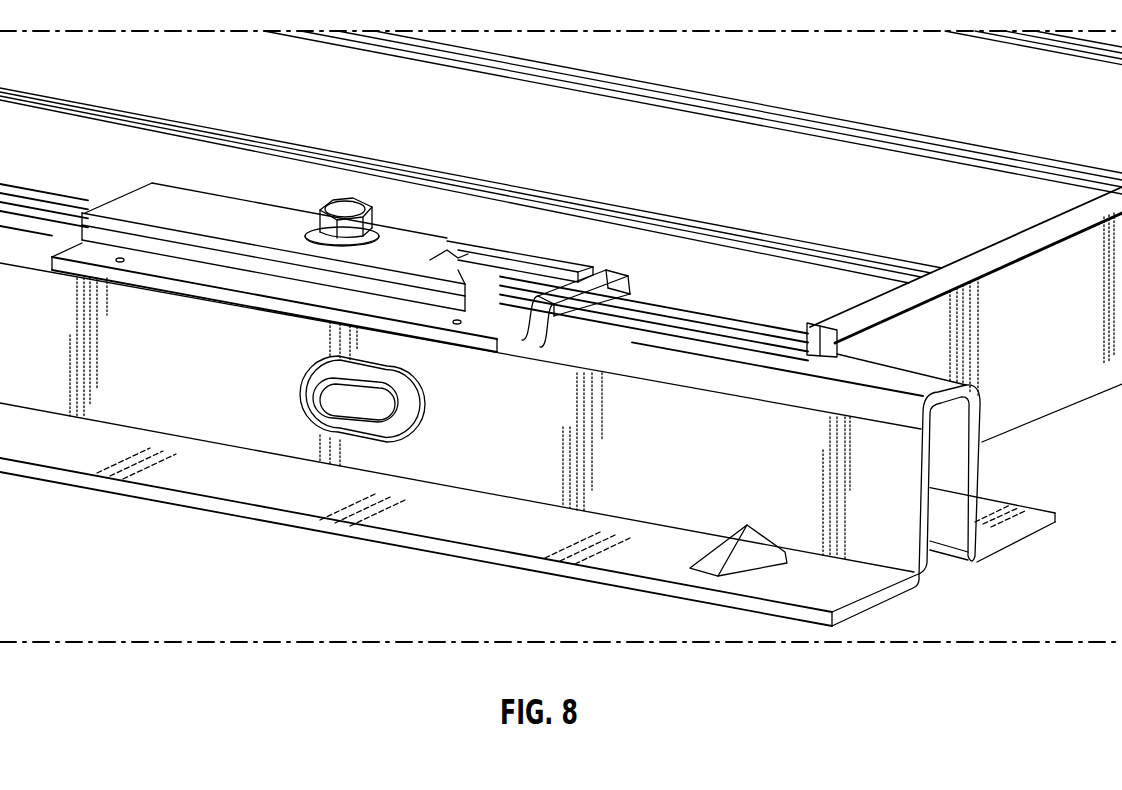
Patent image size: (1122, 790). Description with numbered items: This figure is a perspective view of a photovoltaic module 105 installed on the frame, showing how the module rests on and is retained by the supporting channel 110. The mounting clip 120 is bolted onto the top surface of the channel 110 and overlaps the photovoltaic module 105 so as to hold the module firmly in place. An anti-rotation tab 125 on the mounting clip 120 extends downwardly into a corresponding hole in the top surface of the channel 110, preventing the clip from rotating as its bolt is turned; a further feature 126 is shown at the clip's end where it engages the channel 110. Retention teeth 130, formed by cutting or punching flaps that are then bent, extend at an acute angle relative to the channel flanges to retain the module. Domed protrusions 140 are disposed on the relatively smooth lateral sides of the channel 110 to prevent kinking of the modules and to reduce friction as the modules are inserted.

The photovoltaic module 105 is at (648, 177).
The channel 110 is at (998, 474).
The mounting clip 120 is at (290, 176).
The anti-rotation tab 125 is at (463, 262).
The rib 126 is at (533, 268).
The retention teeth 130 is at (738, 545).
The domed protrusions 140 is at (316, 394).